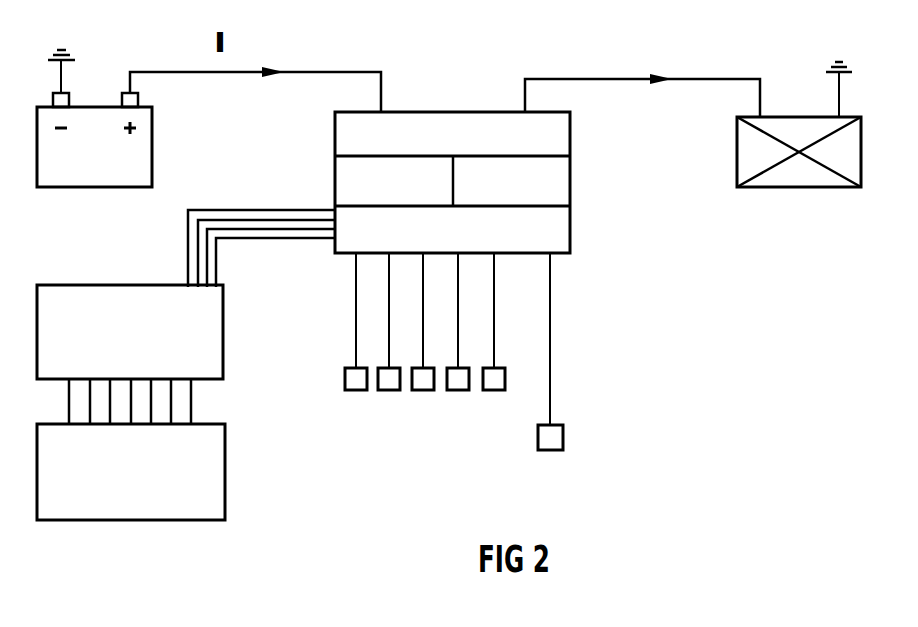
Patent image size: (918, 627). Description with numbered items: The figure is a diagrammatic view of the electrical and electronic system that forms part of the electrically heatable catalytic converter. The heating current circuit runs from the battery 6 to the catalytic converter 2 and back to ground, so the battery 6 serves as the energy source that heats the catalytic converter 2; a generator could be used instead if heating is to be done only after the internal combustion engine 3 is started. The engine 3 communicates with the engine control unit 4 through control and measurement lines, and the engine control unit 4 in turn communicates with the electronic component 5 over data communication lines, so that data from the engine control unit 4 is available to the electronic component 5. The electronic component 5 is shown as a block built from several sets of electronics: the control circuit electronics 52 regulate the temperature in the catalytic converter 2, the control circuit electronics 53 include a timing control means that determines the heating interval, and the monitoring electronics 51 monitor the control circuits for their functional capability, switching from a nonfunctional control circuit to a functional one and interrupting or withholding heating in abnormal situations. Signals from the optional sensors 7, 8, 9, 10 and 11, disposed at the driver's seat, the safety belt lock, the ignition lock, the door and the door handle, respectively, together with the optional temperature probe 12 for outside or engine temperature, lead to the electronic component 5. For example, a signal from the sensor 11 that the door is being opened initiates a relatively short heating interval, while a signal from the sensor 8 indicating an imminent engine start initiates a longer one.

The electrically heatable catalytic converter 2 is at (785, 176).
The internal combustion engine 3 is at (197, 478).
The engine control unit 4 is at (205, 341).
The electronic component 5 is at (458, 155).
The battery 6 is at (135, 151).
The sensor 7 is at (357, 391).
The sensor 8 is at (390, 391).
The sensor 9 is at (423, 391).
The sensor 10 is at (458, 391).
The sensor 11 is at (494, 391).
The temperature sensor 12 is at (563, 440).
The monitoring electronics 51 is at (553, 232).
The control circuit electronics 52 is at (553, 176).
The control circuit electronics 53 is at (445, 128).